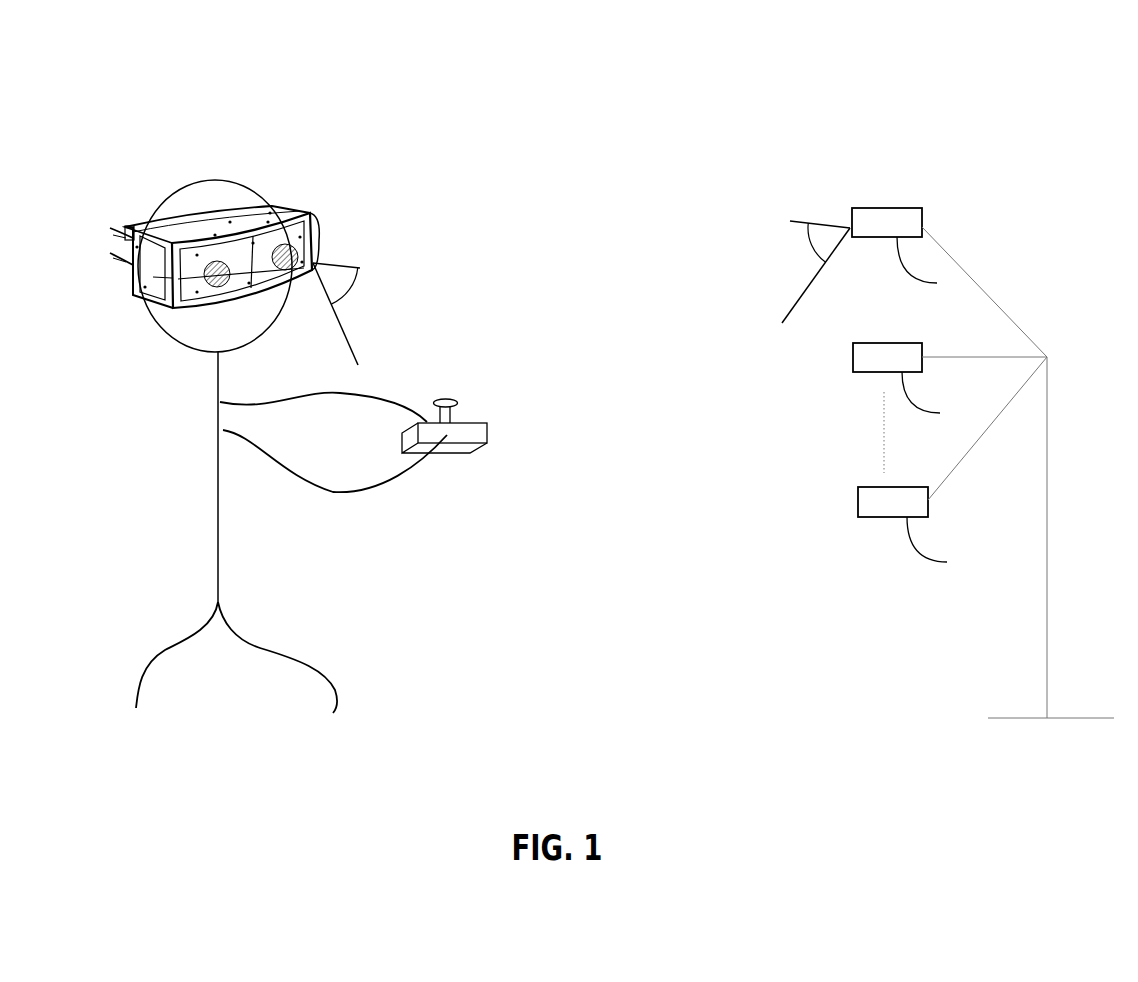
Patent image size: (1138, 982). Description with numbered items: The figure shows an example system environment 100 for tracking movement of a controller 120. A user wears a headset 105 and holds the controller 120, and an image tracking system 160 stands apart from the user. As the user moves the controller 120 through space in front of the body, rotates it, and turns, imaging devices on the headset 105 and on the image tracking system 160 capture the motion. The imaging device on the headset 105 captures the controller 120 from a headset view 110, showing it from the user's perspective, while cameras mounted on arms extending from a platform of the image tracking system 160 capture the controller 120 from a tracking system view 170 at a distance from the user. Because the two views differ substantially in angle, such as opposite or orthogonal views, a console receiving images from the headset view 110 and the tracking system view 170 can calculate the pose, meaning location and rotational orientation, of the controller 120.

The system environment 100 is at (137, 37).
The headset 105 is at (318, 217).
The headset view 110 is at (360, 268).
The controller 120 is at (457, 453).
The image tracking system 160 is at (944, 427).
The tracking system view 170 is at (790, 221).